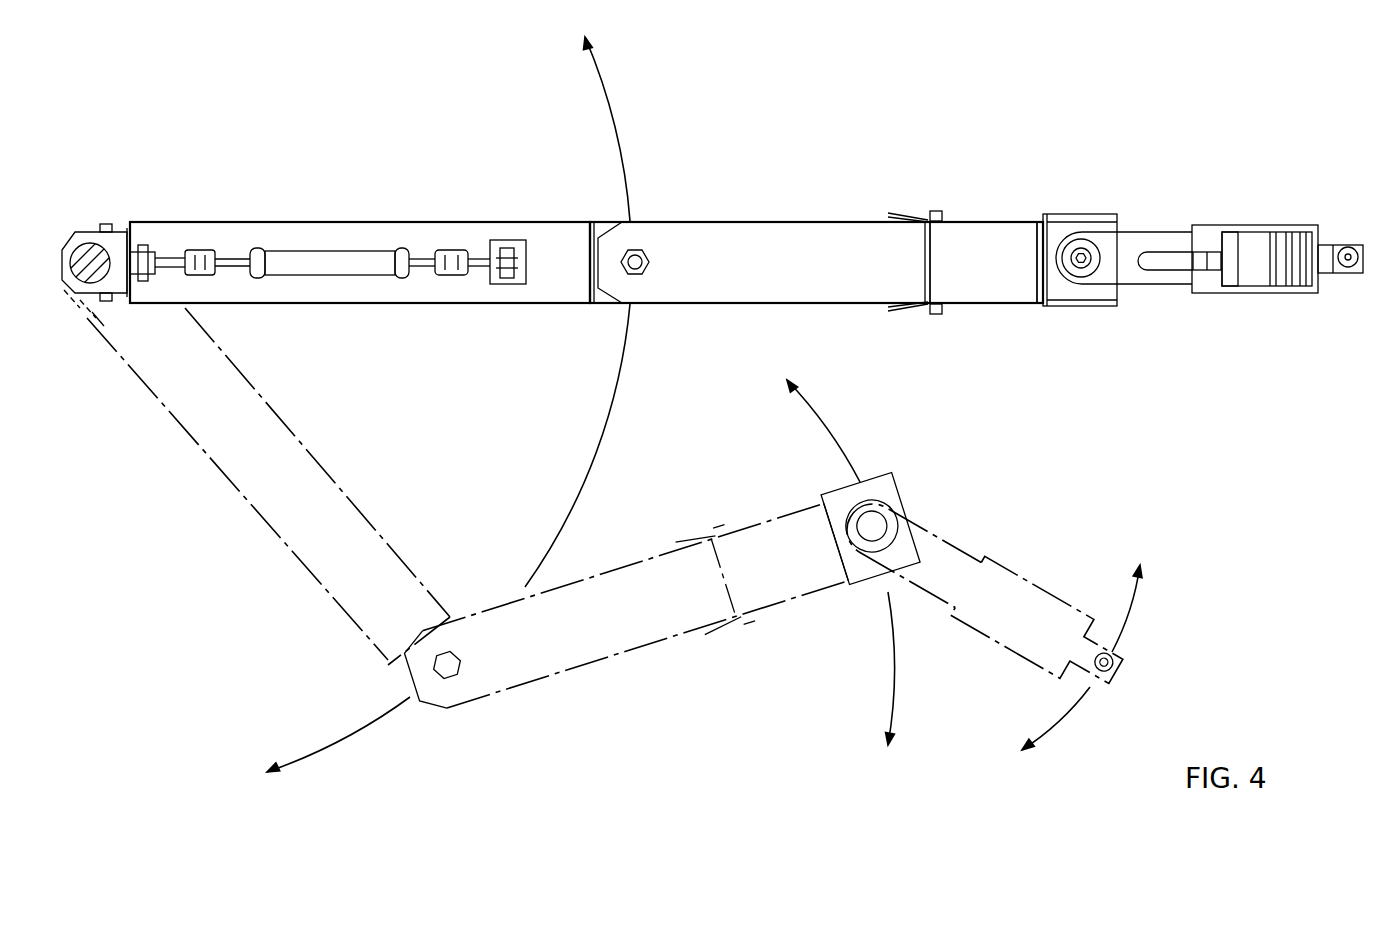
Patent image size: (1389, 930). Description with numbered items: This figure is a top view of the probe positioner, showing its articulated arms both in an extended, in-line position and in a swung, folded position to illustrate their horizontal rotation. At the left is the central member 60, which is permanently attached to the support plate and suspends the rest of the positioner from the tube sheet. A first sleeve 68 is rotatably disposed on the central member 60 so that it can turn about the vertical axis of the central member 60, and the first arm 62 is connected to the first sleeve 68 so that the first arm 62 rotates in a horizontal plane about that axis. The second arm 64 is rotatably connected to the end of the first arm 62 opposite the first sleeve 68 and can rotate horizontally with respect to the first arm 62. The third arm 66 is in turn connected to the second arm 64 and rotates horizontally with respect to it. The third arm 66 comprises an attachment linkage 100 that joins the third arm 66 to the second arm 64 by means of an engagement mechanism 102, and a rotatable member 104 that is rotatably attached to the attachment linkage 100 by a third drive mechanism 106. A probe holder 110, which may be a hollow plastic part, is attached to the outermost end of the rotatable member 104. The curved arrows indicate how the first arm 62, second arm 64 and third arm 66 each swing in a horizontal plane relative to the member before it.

The central member 60 is at (90, 246).
The first arm 62 is at (324, 233).
The second arm 64 is at (792, 240).
The third arm 66 is at (1152, 205).
The first sleeve 68 is at (75, 240).
The attachment linkage 100 is at (1017, 288).
The engagement mechanism 102 is at (911, 320).
The rotatable member 104 is at (1170, 278).
The third drive mechanism 106 is at (1065, 227).
The probe holder 110 is at (1346, 248).